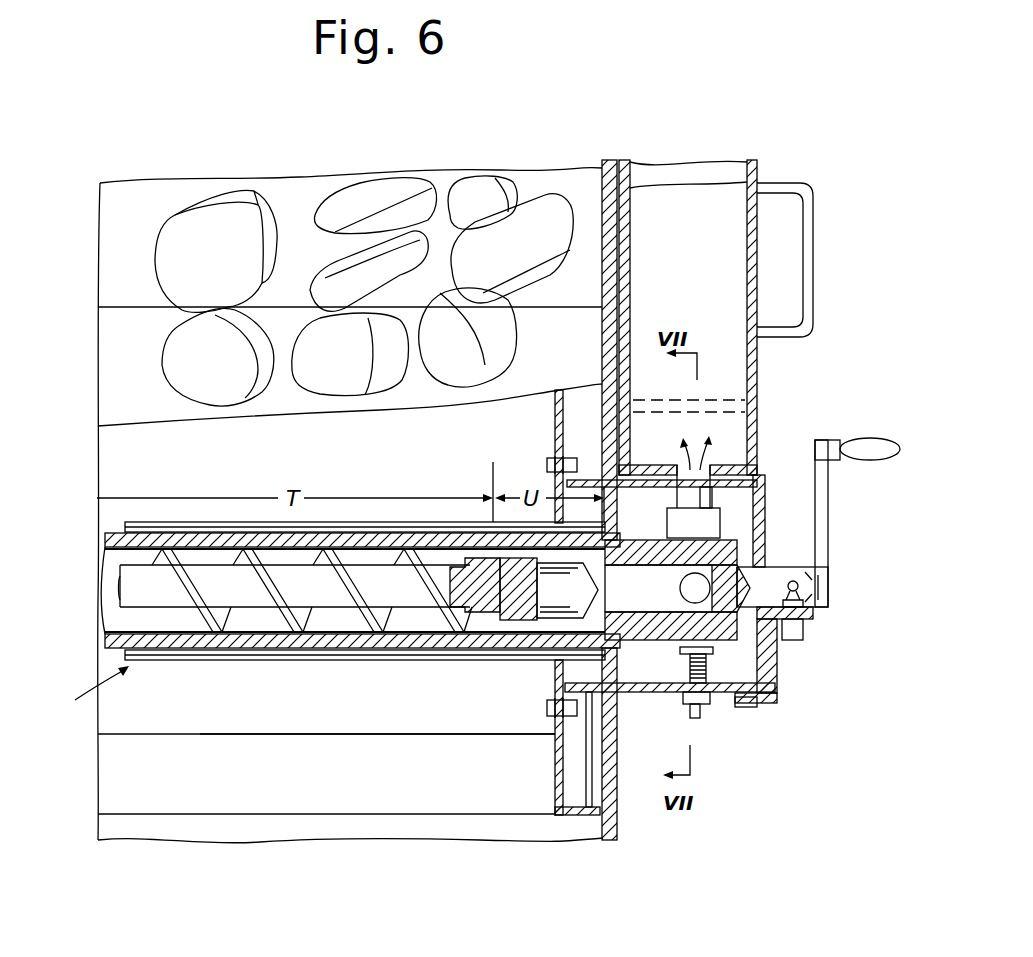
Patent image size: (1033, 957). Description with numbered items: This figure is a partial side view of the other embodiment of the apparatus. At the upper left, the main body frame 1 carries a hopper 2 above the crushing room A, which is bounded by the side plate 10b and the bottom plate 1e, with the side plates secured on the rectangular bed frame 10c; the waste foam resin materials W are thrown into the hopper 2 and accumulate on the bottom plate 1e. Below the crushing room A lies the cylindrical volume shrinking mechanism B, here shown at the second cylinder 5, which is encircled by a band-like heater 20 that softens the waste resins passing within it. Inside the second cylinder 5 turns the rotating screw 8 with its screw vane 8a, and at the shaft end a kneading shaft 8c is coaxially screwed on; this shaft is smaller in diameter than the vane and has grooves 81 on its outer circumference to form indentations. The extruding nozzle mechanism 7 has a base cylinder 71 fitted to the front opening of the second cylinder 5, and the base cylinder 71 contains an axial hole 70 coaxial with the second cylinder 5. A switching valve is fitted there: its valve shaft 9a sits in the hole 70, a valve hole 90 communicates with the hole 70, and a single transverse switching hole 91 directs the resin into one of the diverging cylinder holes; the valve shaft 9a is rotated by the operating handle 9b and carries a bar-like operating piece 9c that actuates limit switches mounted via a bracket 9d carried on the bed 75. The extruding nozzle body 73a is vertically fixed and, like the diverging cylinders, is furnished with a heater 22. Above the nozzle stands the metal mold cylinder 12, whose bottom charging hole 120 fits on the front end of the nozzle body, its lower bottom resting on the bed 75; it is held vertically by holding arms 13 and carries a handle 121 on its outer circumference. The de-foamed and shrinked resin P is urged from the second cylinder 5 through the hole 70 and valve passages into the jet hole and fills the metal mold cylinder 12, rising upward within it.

The main body frame 1 is at (174, 827).
The bottom plate 1e is at (374, 721).
The hopper 2 is at (562, 187).
The second cylinder 5 is at (258, 650).
The extruding nozzle mechanism 7 is at (636, 605).
The rotating screw 8 is at (403, 600).
The screw vane 8a is at (200, 620).
The kneading shaft 8c is at (480, 603).
The valve shaft 9a is at (828, 602).
The operating handle 9b is at (866, 462).
The operating piece 9c is at (800, 583).
The bracket 9d is at (780, 665).
The side plate 10b is at (553, 765).
The bed frame 10c is at (287, 833).
The metal mold cylinder 12 is at (755, 395).
The holding arms 13 is at (713, 398).
The heater 20 is at (345, 661).
The heater 22 is at (718, 518).
The hole 70 is at (642, 608).
The base cylinder 71 is at (737, 635).
The extruding nozzle body 73a is at (758, 470).
The bed 75 is at (588, 695).
The grooves 81 is at (547, 595).
The valve hole 90 is at (758, 570).
The switching hole 91 is at (758, 706).
The charging hole 120 is at (757, 432).
The handle 121 is at (808, 237).
The crushing room A is at (147, 400).
The volume shrinking mechanism B is at (87, 696).
The de-foamed and shrinked resin P is at (700, 208).
The waste foam resin materials W is at (380, 198).